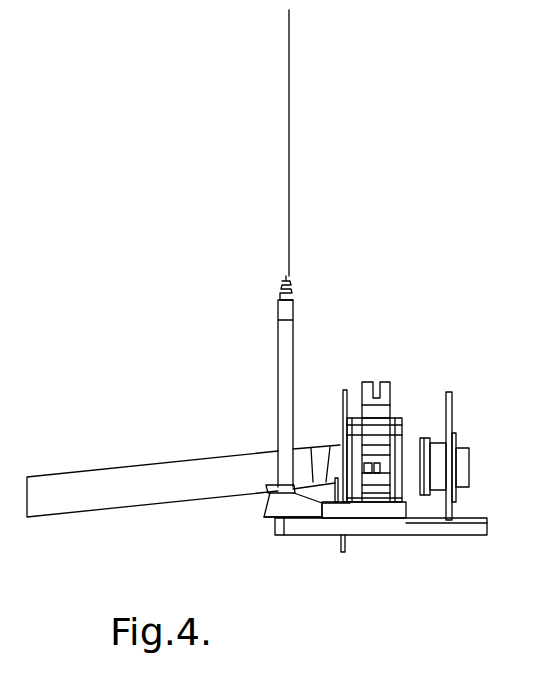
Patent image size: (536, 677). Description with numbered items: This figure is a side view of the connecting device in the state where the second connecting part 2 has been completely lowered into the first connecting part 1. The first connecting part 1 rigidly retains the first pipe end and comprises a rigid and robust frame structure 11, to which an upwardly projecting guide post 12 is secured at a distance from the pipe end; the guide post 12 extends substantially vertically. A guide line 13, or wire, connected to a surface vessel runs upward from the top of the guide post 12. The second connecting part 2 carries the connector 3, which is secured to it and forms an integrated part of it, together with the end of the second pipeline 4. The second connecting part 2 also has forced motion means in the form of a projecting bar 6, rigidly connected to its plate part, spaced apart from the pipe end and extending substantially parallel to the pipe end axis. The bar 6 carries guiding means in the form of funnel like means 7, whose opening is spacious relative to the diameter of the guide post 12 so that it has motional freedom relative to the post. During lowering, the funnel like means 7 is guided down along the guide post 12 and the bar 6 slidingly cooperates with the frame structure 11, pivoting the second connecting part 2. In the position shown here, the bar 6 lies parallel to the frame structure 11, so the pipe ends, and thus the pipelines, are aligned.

The first connecting part 1 is at (455, 388).
The second connecting part 2 is at (345, 381).
The connector 3 is at (385, 382).
The second pipeline 4 is at (117, 486).
The projecting bar 6 is at (373, 520).
The funnel like means 7 is at (297, 527).
The frame structure 11 is at (432, 527).
The guide post 12 is at (285, 372).
The guide line 13 is at (289, 127).